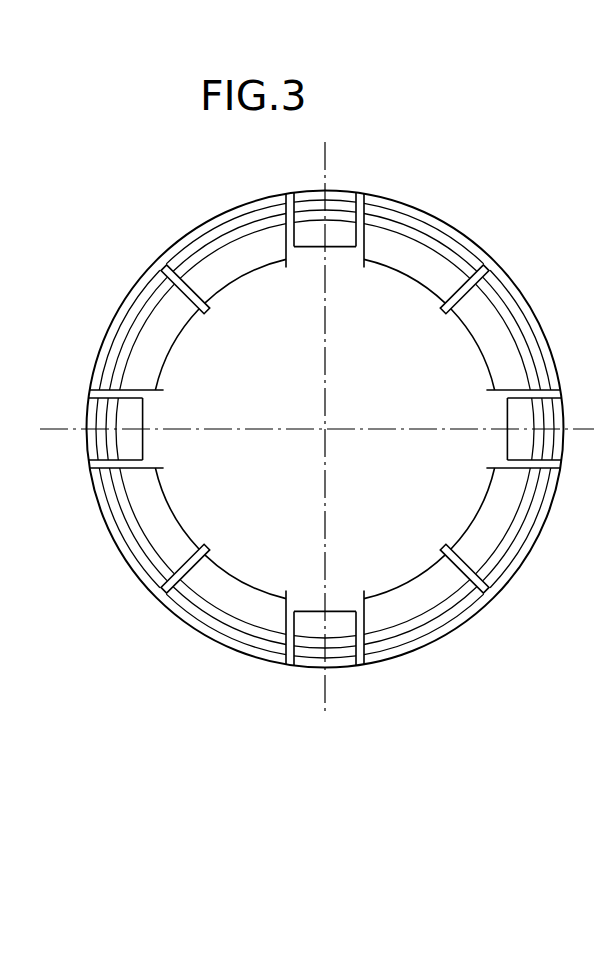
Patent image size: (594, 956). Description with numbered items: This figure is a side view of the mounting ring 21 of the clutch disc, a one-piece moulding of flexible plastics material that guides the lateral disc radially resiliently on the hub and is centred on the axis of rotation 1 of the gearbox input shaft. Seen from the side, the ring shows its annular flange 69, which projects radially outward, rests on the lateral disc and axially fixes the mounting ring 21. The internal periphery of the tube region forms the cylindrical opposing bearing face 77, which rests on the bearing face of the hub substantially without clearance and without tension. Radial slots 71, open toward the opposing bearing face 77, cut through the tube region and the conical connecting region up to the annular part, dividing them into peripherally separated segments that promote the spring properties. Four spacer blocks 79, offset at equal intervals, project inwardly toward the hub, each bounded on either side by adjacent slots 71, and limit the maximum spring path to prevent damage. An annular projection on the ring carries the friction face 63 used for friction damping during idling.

The axis of rotation 1 is at (325, 429).
The mounting ring 21 is at (146, 176).
The friction face 63 is at (205, 247).
The annular flange 69 is at (257, 205).
The radial slots 71 is at (356, 257).
The opposing bearing face 77 is at (413, 280).
The spacer blocks 79 is at (341, 231).